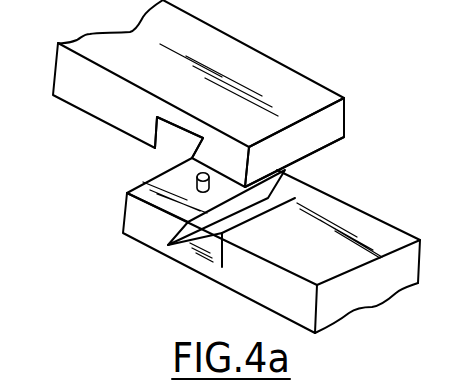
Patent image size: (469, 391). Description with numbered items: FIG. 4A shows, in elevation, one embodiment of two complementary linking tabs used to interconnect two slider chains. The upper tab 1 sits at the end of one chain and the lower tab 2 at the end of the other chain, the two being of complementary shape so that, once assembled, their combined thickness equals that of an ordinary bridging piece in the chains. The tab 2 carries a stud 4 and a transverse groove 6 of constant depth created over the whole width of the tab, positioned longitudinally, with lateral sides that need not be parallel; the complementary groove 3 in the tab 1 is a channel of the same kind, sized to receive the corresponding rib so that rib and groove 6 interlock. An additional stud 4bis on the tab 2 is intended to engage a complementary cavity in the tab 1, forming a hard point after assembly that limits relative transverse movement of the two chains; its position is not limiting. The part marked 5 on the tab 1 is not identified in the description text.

The tab 1 is at (100, 131).
The tab 2 is at (418, 228).
The groove 3 is at (175, 144).
The stud 4 is at (140, 208).
The stud 4bis is at (198, 185).
The end face of upper block 5 is at (230, 148).
The transverse groove 6 is at (297, 185).